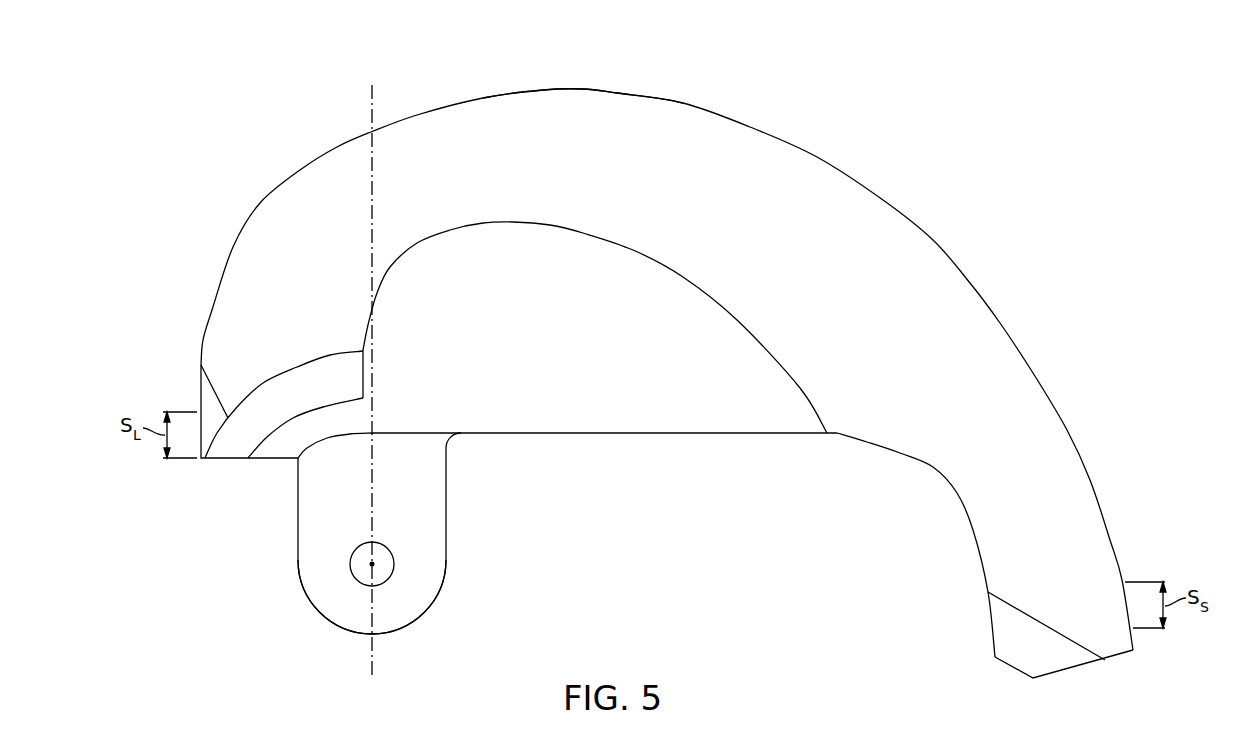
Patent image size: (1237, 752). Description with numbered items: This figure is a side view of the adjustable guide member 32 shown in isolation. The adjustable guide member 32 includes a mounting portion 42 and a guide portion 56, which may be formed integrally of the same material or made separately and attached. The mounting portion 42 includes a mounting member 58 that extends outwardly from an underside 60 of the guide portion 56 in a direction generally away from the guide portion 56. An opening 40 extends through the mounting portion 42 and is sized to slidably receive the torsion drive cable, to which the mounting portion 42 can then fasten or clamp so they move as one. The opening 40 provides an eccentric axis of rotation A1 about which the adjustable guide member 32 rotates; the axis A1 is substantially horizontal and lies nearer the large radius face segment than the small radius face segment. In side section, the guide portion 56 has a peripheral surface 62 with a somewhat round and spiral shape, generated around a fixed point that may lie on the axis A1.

The adjustable guide member 32 is at (875, 83).
The guide portion 56 is at (998, 243).
The peripheral surface 62 is at (584, 90).
The underside 60 is at (607, 435).
The mounting member 58 is at (437, 545).
The mounting portion 42 is at (269, 549).
The opening 40 is at (388, 580).
The eccentric axis of rotation A1 is at (372, 564).